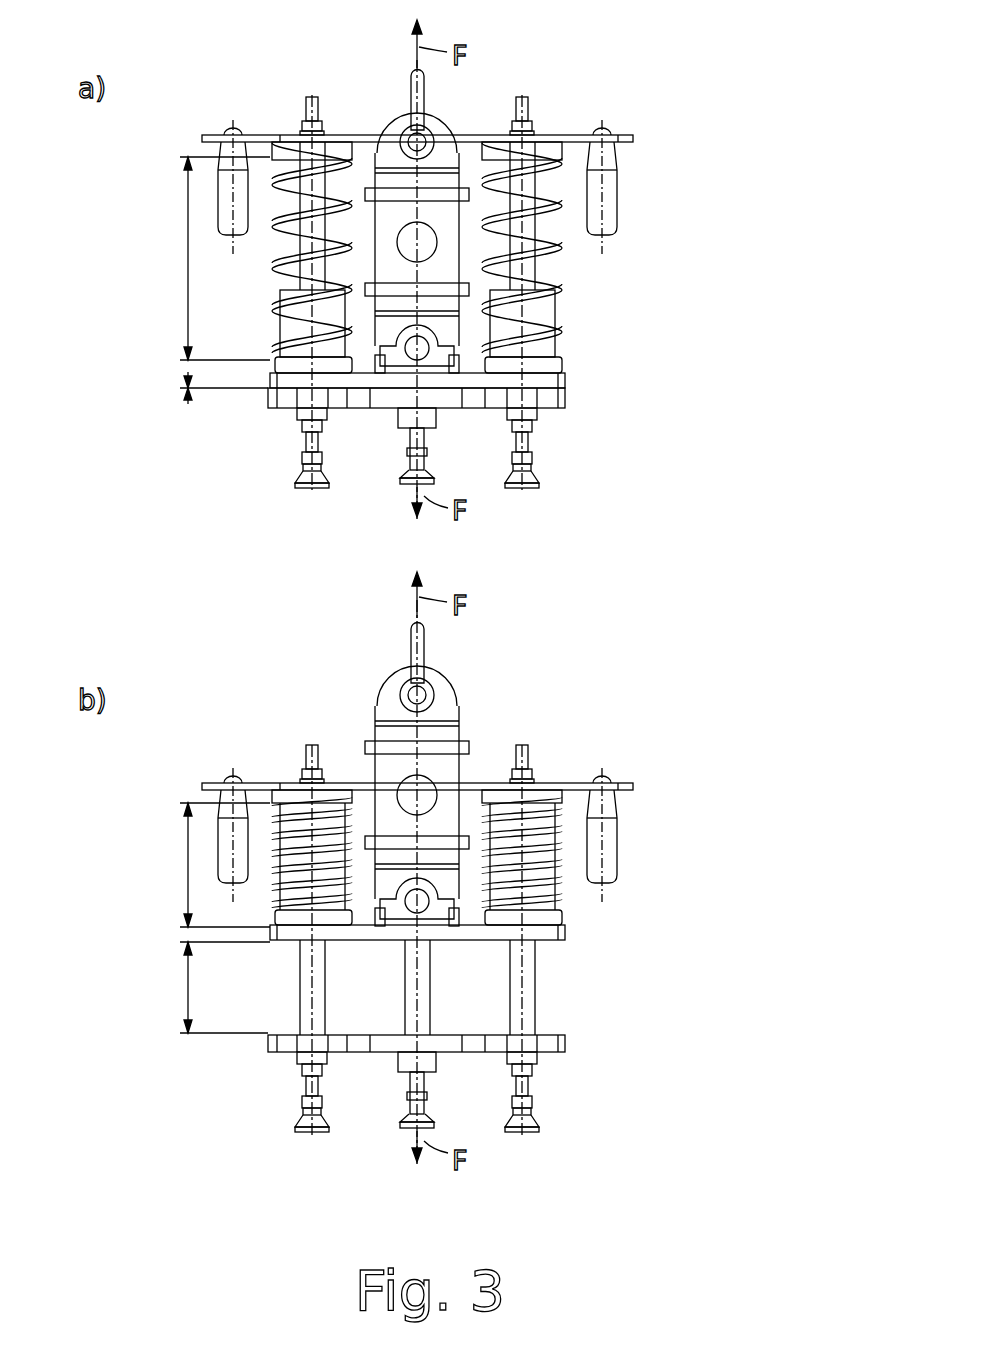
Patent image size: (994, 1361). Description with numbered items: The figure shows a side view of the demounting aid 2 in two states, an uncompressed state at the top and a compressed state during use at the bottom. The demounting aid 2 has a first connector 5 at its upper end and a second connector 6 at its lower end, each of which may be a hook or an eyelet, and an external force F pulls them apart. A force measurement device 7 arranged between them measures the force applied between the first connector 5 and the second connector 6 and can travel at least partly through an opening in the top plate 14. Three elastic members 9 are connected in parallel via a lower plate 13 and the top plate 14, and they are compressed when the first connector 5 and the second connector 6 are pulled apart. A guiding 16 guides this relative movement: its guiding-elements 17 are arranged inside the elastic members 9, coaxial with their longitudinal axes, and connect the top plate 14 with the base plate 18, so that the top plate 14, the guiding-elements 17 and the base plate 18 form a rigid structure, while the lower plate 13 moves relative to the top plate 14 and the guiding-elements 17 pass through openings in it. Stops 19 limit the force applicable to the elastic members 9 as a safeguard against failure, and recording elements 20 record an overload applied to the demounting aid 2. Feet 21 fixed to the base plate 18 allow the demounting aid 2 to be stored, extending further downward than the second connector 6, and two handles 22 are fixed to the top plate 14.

The demounting aid 2 is at (696, 114).
The first connector 5 is at (421, 91).
The second connector 6 is at (405, 437).
The force measurement device 7 is at (382, 113).
The elastic member 9 is at (270, 270).
The lower plate 13 is at (548, 380).
The top plate 14 is at (575, 135).
The guiding 16 is at (586, 262).
The guiding-element 17 is at (318, 262).
The base plate 18 is at (568, 413).
The stop 19 is at (292, 318).
The recording element 20 is at (300, 410).
The foot 21 is at (297, 477).
The handle 22 is at (228, 190).